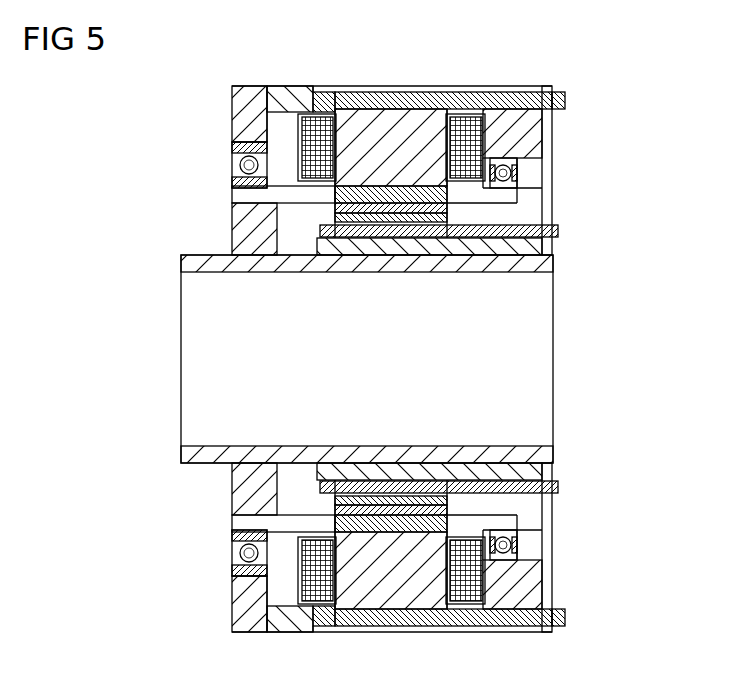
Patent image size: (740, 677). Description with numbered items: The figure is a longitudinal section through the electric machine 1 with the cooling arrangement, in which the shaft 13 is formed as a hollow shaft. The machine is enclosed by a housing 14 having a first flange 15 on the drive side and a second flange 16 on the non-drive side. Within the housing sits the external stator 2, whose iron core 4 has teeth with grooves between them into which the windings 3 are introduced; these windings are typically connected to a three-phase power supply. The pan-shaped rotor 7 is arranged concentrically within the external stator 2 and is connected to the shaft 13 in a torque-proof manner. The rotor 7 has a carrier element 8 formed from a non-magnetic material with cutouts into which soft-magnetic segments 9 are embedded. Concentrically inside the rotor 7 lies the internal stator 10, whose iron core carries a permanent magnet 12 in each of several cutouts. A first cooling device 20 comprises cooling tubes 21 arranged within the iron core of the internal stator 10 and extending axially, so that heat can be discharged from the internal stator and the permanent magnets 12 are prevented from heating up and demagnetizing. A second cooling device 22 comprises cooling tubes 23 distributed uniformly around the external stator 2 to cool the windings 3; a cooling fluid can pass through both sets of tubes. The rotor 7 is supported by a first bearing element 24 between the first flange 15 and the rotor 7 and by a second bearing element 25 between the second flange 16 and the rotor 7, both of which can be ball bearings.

The electric machine 1 is at (212, 102).
The external stator 2 is at (393, 135).
The windings 3 is at (325, 100).
The iron core 4 is at (360, 92).
The rotor 7 is at (452, 196).
The carrier element 8 is at (245, 196).
The soft-magnetic segments 9 is at (348, 209).
The internal stator 10 is at (316, 212).
The permanent magnet 12 is at (388, 217).
The shaft 13 is at (185, 262).
The housing 14 is at (297, 83).
The first flange 15 is at (250, 603).
The second flange 16 is at (528, 583).
The first cooling device 20 is at (412, 223).
The cooling tubes 21 is at (560, 231).
The second cooling device 22 is at (554, 86).
The cooling tubes 23 is at (566, 101).
The first bearing element 24 is at (237, 551).
The second bearing element 25 is at (512, 172).